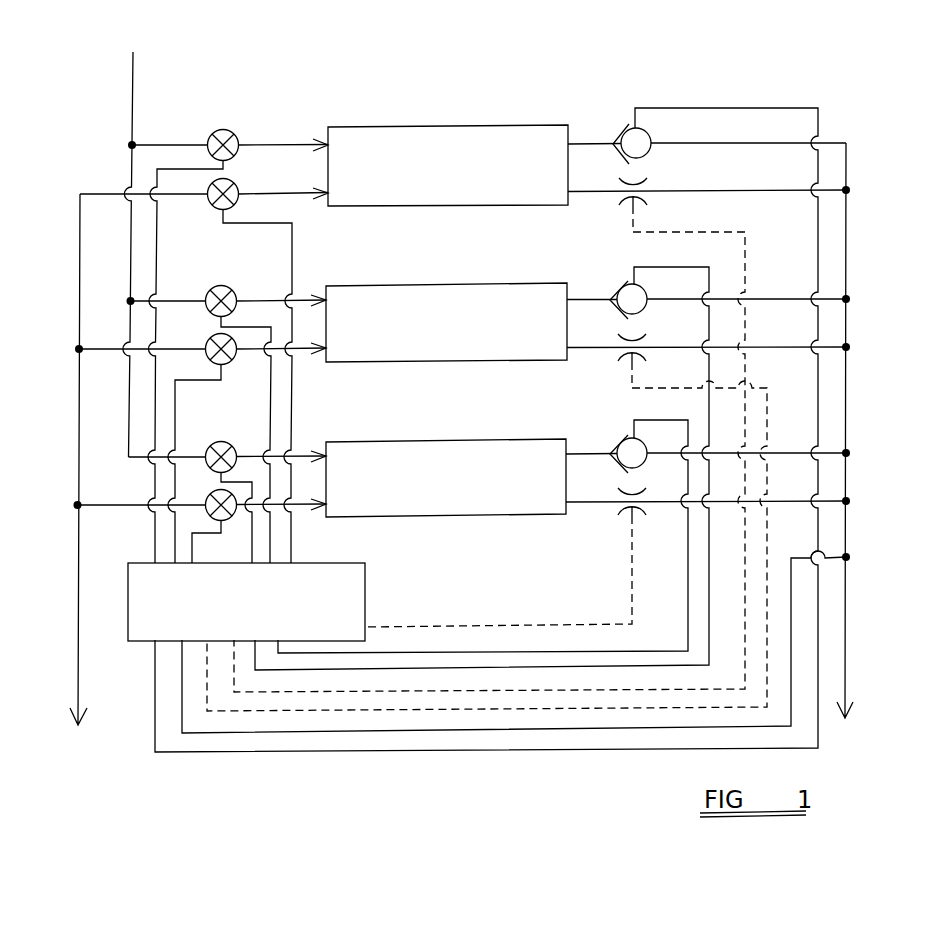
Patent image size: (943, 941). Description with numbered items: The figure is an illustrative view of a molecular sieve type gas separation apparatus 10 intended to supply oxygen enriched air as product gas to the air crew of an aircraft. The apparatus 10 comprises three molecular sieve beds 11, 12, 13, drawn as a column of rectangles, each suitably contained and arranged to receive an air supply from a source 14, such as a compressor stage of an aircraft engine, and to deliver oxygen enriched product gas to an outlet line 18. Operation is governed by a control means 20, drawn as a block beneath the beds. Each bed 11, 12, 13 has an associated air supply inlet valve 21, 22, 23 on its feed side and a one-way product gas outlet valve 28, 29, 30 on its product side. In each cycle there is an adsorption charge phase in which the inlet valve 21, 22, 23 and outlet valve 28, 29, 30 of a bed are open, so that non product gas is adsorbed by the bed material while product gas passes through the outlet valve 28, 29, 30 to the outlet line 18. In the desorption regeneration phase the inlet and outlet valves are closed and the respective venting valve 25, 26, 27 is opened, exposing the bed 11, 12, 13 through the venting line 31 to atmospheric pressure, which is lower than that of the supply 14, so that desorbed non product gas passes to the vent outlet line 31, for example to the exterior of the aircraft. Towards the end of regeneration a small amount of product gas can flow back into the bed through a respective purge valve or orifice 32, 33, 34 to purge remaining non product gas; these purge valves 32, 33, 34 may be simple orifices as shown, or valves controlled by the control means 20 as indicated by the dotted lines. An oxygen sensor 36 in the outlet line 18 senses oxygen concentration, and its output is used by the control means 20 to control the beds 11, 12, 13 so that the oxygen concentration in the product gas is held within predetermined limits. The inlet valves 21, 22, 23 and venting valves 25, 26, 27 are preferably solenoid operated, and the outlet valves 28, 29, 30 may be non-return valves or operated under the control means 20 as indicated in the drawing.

The gas separation apparatus 10 is at (69, 266).
The molecular sieve bed 11 is at (529, 127).
The molecular sieve bed 12 is at (528, 283).
The molecular sieve bed 13 is at (518, 440).
The source 14 is at (133, 92).
The outlet line 18 is at (846, 647).
The control means 20 is at (366, 607).
The air supply inlet valve 21 is at (222, 128).
The air supply inlet valve 22 is at (221, 285).
The air supply inlet valve 23 is at (221, 441).
The venting valve 25 is at (238, 186).
The venting valve 26 is at (210, 340).
The venting valve 27 is at (209, 494).
The product gas outlet valve 28 is at (619, 130).
The product gas outlet valve 29 is at (620, 293).
The product gas outlet valve 30 is at (618, 442).
The venting line 31 is at (78, 632).
The purge valve 32 is at (620, 190).
The purge valve 33 is at (622, 340).
The purge valve 34 is at (622, 497).
The oxygen sensor 36 is at (848, 554).